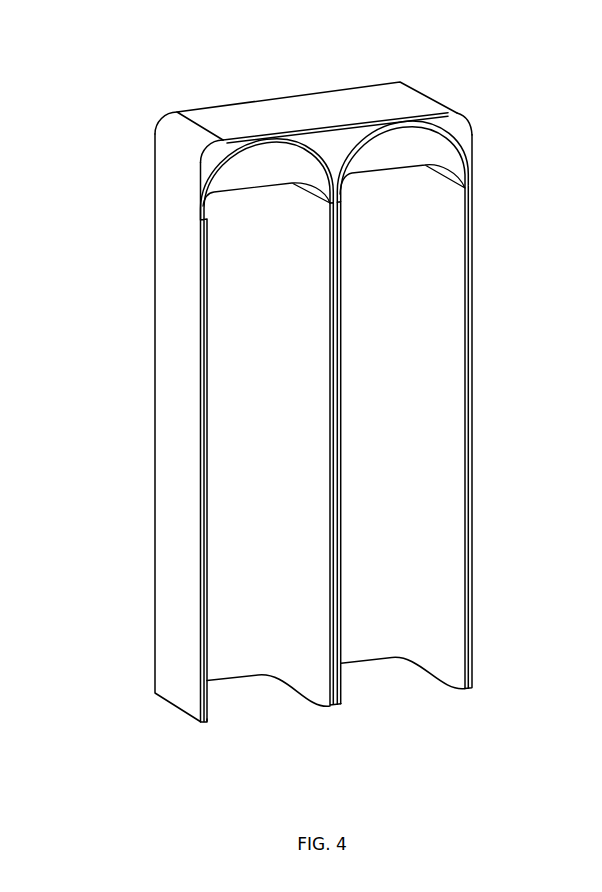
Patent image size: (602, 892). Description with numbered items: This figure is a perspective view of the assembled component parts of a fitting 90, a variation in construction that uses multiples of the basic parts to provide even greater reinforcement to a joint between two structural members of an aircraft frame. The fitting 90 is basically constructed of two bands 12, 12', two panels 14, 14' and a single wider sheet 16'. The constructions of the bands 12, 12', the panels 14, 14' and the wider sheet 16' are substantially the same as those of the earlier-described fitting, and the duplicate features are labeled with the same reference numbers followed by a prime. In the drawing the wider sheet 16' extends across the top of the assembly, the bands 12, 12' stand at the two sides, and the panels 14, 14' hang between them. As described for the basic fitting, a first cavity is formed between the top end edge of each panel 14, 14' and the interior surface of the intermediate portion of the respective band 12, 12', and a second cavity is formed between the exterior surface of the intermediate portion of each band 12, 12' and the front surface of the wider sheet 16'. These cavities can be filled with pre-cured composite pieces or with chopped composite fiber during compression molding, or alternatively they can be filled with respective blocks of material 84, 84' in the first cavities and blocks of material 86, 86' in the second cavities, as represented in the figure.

The wider sheet 16' is at (317, 83).
The block of material 86 is at (163, 126).
The block of material 86' is at (481, 93).
The block of material 84 is at (191, 175).
The block of material 84' is at (452, 150).
The fitting 90 is at (474, 424).
The band 12 is at (139, 439).
The band 12' is at (511, 442).
The panel 14 is at (274, 482).
The panel 14' is at (401, 466).